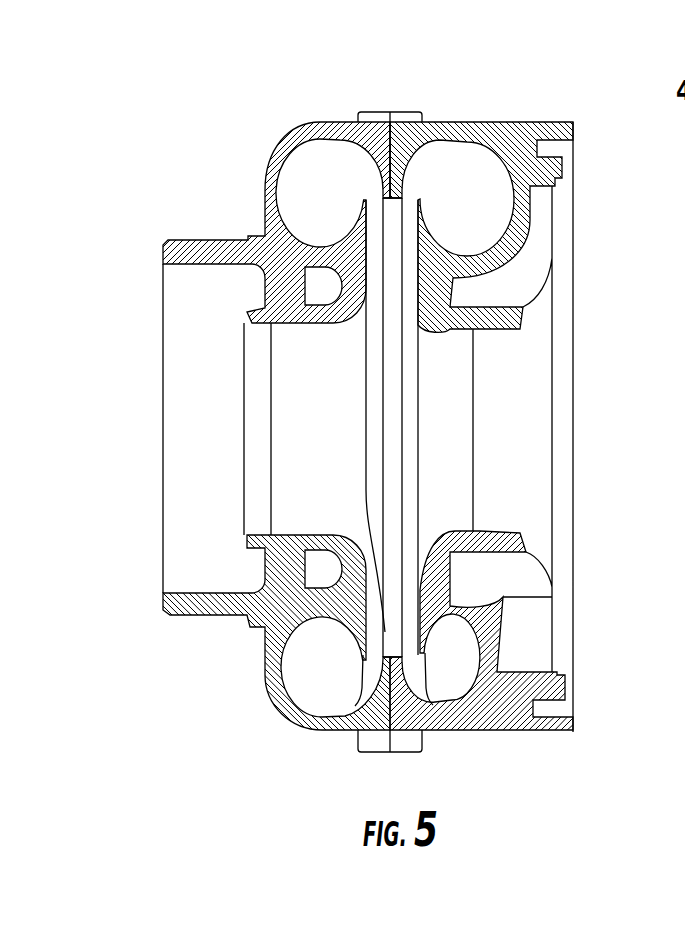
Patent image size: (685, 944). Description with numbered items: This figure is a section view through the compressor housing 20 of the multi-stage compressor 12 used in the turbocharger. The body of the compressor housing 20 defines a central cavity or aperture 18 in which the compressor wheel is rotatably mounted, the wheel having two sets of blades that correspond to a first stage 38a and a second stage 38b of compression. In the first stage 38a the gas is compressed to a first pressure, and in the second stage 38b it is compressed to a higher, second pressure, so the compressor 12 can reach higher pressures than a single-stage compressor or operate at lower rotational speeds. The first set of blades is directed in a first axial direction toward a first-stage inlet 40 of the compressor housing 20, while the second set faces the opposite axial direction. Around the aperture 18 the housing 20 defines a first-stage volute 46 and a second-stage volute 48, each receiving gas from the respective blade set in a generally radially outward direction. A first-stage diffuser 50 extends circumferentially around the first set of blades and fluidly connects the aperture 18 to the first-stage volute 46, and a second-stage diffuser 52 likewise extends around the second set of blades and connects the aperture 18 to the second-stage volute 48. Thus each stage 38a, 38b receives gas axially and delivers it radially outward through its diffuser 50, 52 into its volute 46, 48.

The multi-stage compressor 12 is at (588, 420).
The cavity or aperture 18 is at (355, 433).
The compressor housing 20 is at (270, 97).
The first stage 38a is at (340, 112).
The second stage 38b is at (480, 115).
The first-stage inlet 40 is at (148, 383).
The first-stage volute 46 is at (313, 688).
The second-stage volute 48 is at (438, 675).
The first-stage diffuser 50 is at (377, 290).
The second-stage diffuser 52 is at (410, 312).